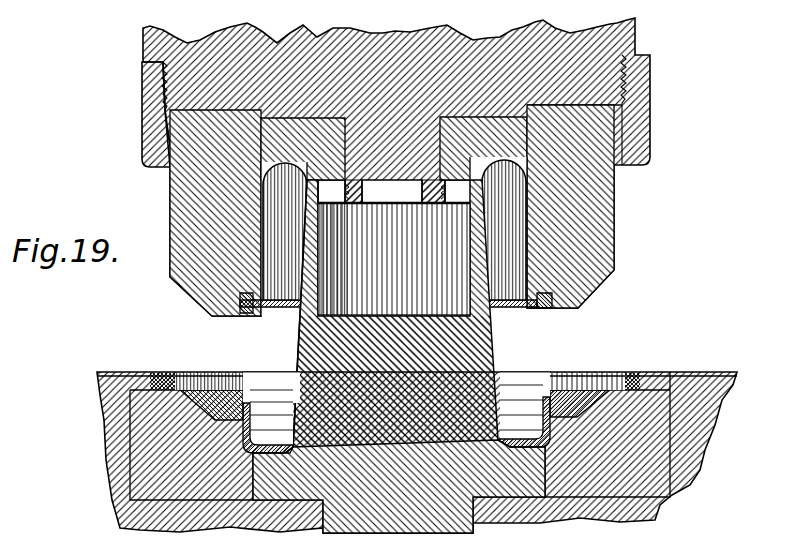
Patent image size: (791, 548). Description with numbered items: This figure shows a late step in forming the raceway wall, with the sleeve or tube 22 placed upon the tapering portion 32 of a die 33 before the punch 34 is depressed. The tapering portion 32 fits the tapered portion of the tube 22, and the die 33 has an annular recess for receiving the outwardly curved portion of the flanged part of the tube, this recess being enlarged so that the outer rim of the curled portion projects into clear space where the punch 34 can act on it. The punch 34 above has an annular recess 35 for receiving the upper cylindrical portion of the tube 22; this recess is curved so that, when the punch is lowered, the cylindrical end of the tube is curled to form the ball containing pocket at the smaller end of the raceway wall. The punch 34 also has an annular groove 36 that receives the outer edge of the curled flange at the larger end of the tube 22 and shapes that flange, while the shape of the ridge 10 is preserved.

The ridge 10 is at (268, 412).
The sleeve or tube 22 is at (528, 342).
The tapering portion 32 is at (304, 340).
The die 33 is at (637, 450).
The punch 34 is at (590, 243).
The annular recess 35 is at (503, 180).
The annular groove 36 is at (545, 308).